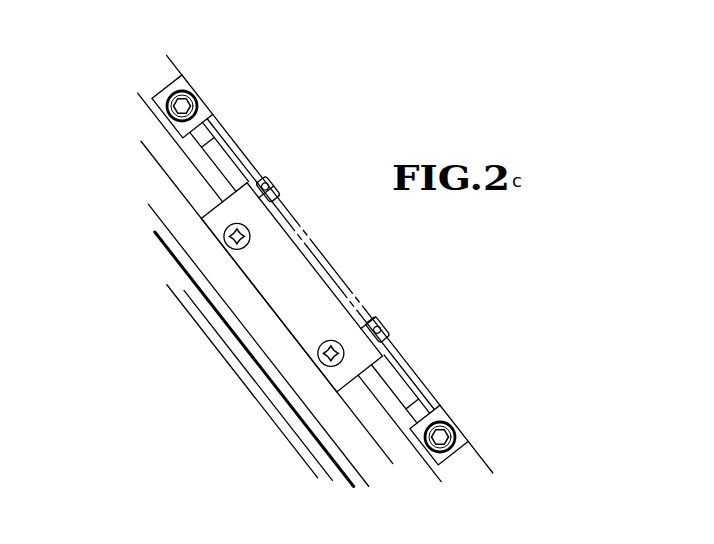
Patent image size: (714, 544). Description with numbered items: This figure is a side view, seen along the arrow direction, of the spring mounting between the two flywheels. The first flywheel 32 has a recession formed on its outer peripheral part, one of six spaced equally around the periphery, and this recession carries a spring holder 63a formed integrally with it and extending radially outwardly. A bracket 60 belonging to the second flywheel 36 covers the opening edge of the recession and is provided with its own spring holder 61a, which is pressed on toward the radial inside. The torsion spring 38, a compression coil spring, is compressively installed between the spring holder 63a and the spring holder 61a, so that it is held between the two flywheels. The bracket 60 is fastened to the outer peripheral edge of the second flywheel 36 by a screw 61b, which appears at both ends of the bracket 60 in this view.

The first flywheel 32 is at (482, 453).
The second flywheel 36 is at (285, 355).
The torsion spring 38 is at (320, 247).
The bracket 60 is at (291, 274).
The spring holder 61a is at (394, 341).
The screw 61b is at (233, 246).
The spring holder 63a is at (263, 178).